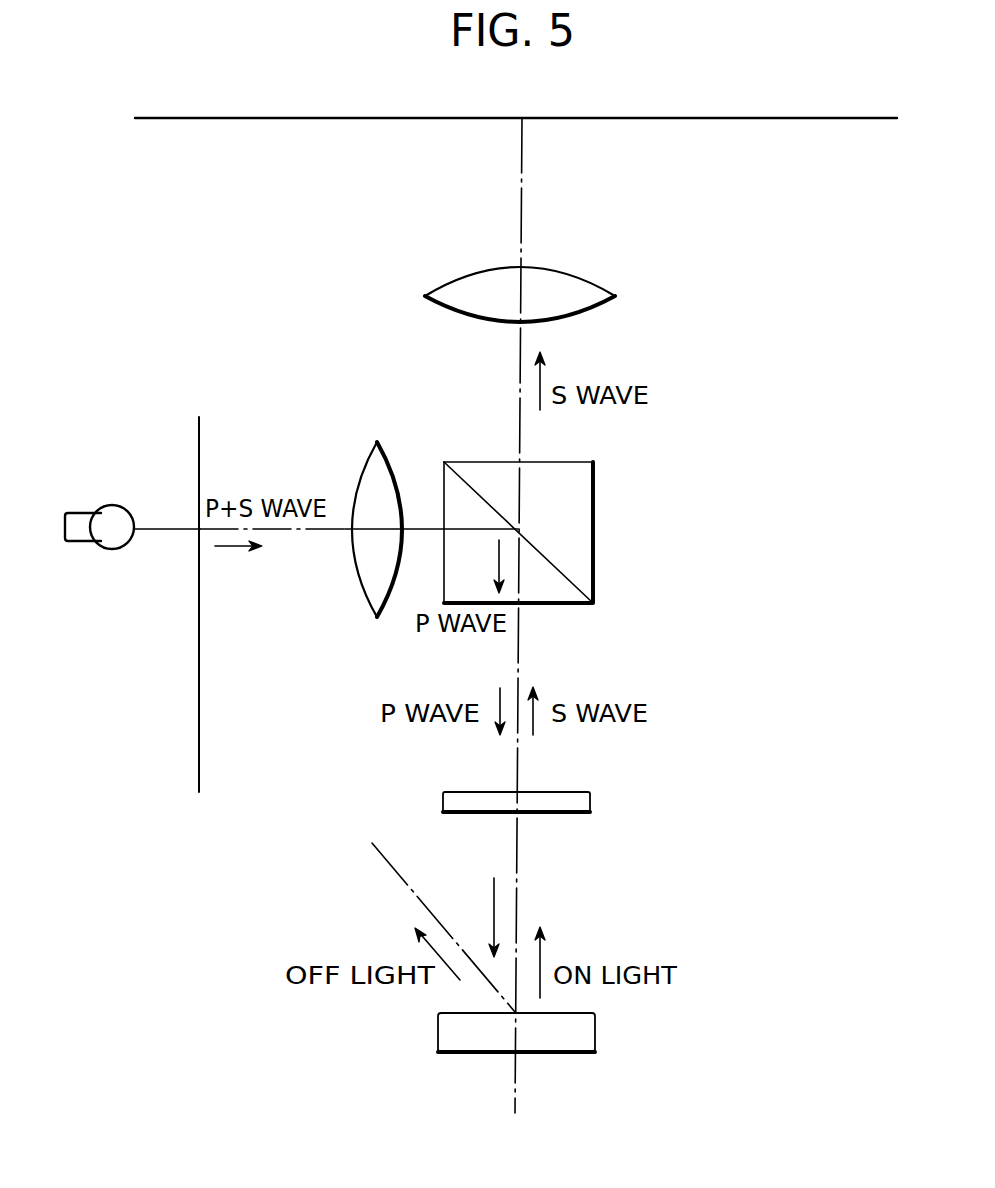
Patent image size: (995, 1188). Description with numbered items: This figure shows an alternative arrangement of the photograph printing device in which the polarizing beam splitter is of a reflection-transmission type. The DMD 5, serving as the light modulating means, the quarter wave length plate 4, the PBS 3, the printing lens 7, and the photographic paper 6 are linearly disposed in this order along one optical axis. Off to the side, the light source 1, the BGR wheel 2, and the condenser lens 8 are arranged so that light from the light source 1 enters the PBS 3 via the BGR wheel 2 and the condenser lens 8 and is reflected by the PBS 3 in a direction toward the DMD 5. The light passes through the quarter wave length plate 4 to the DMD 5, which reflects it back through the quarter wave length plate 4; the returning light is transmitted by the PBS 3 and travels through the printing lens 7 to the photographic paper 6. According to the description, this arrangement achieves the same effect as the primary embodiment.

The light source 1 is at (83, 510).
The BGR wheel 2 is at (199, 774).
The polarizing beam splitter 3 is at (593, 570).
The quarter wave length plate 4 is at (590, 800).
The DMD 5 is at (595, 1037).
The photographic paper 6 is at (840, 118).
The printing lens 7 is at (590, 311).
The condenser lens 8 is at (363, 598).